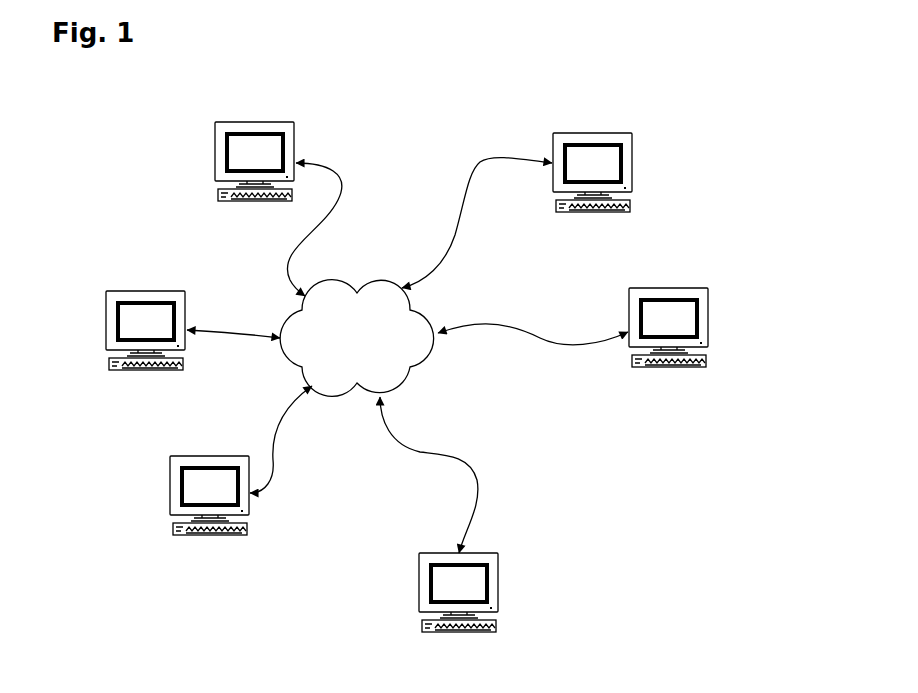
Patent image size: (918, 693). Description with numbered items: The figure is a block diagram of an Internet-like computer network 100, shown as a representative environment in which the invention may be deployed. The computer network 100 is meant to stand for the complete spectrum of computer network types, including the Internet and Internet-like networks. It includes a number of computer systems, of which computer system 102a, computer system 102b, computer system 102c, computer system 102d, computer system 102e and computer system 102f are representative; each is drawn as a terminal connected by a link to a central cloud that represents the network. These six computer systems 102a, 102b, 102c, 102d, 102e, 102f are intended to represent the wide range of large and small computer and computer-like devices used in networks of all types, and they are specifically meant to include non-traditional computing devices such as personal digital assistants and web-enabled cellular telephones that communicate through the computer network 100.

The computer network 100 is at (397, 157).
The computer system 102a is at (215, 163).
The computer system 102b is at (106, 330).
The computer system 102c is at (170, 497).
The computer system 102d is at (419, 595).
The computer system 102e is at (710, 320).
The computer system 102f is at (634, 166).